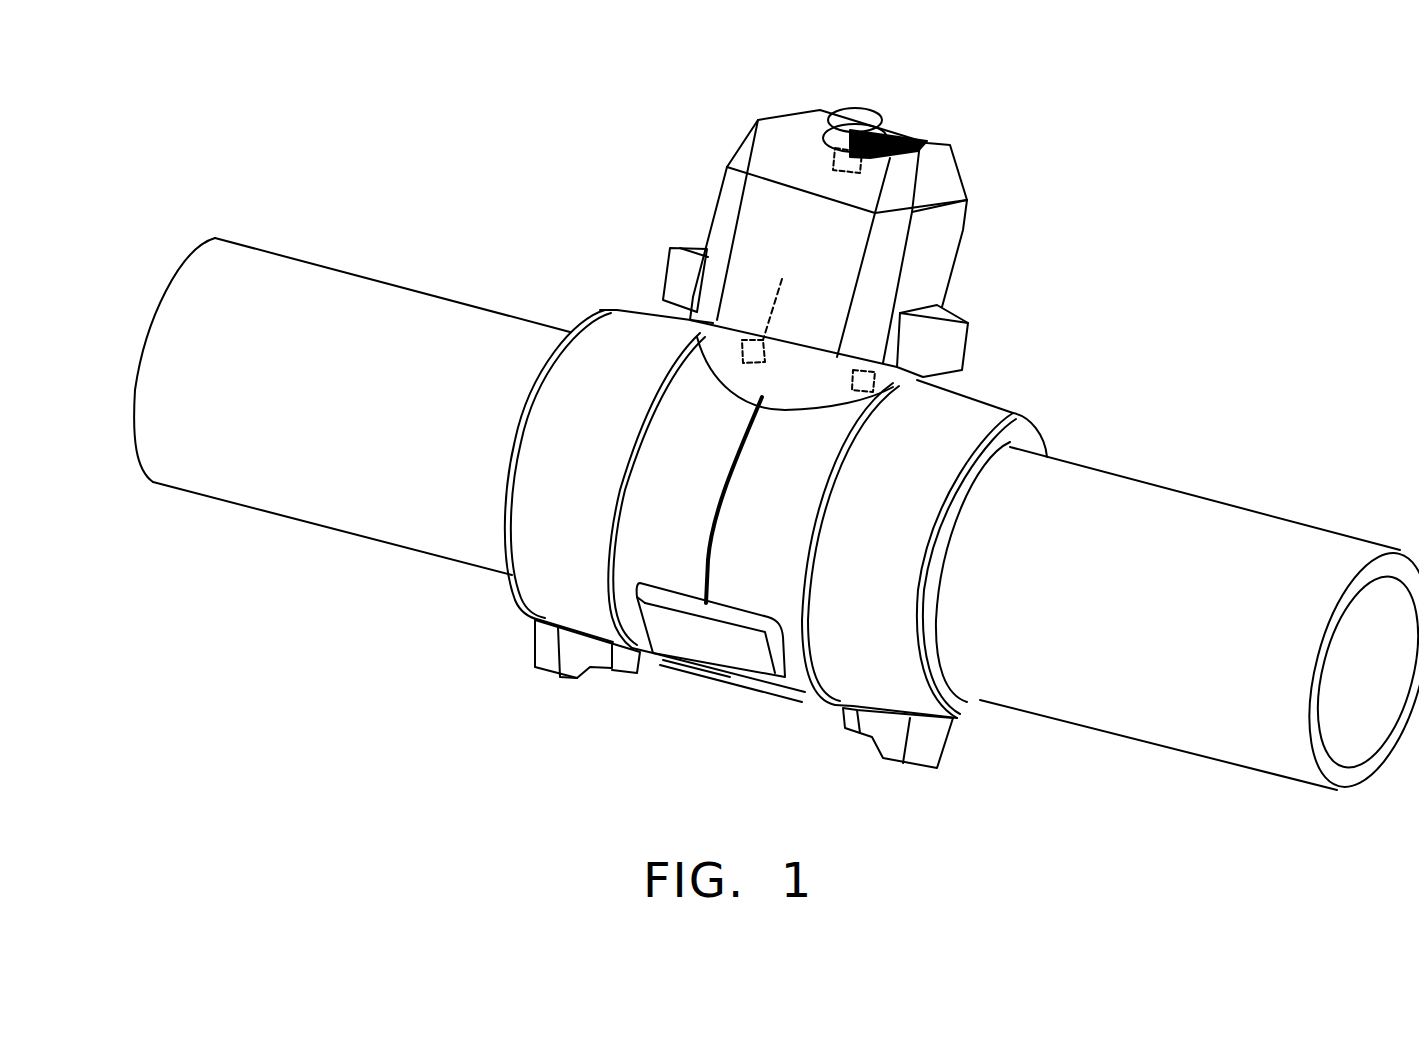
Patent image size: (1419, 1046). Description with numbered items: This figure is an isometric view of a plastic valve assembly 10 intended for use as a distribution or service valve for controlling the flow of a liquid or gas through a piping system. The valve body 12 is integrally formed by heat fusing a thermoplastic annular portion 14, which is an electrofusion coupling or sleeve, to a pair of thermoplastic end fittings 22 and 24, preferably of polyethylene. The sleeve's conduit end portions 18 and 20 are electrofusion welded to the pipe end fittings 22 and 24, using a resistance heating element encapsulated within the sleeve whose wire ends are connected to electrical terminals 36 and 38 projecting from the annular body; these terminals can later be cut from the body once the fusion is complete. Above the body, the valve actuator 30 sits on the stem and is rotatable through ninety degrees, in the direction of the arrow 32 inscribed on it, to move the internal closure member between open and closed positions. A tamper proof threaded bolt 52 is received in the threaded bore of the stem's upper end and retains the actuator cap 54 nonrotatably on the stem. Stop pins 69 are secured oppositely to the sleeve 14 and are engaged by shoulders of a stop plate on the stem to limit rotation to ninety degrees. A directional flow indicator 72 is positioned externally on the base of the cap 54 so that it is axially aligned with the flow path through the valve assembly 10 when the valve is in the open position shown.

The plastic valve assembly 10 is at (320, 160).
The valve body 12 is at (642, 273).
The thermoplastic annular portion 14 is at (647, 535).
The conduit end portion 18 is at (623, 322).
The conduit end portion 20 is at (1013, 418).
The thermoplastic end fitting 22 is at (220, 262).
The thermoplastic end fitting 24 is at (1273, 538).
The valve actuator 30 is at (715, 115).
The arrow 32 is at (920, 145).
The electrical terminal 36 is at (568, 658).
The electrical terminal 38 is at (922, 755).
The tamper proof threaded bolt 52 is at (870, 118).
The actuator cap 54 is at (935, 250).
The stop pin 69 is at (782, 279).
The directional flow indicator 72 is at (947, 340).